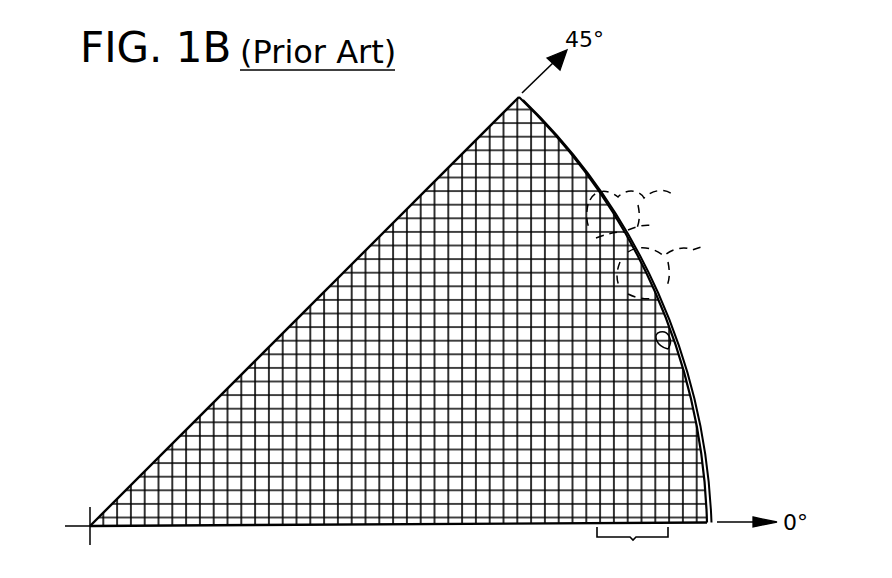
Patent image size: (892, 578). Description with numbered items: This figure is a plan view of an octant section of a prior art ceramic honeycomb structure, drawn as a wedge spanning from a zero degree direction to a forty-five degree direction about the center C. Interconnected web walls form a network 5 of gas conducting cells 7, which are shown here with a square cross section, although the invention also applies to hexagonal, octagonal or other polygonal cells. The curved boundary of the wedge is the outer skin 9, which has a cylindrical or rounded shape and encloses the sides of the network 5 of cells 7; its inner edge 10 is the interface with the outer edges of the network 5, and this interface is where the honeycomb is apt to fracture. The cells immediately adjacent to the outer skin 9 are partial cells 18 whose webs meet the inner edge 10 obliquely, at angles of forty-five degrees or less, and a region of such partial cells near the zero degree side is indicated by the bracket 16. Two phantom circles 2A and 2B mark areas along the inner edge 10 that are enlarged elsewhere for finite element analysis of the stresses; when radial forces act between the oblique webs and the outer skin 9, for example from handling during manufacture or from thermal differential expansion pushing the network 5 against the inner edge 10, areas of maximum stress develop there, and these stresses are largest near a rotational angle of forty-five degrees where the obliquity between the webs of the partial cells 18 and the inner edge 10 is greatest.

The network 5 is at (278, 290).
The gas conducting cells 7 is at (387, 268).
The outer skin 9 is at (662, 303).
The inner edge 10 is at (673, 350).
The phantom circle 2A is at (710, 244).
The phantom circle 2B is at (679, 188).
The cell width region 16 is at (632, 547).
The partial cells 18 is at (704, 472).
The center C is at (78, 516).